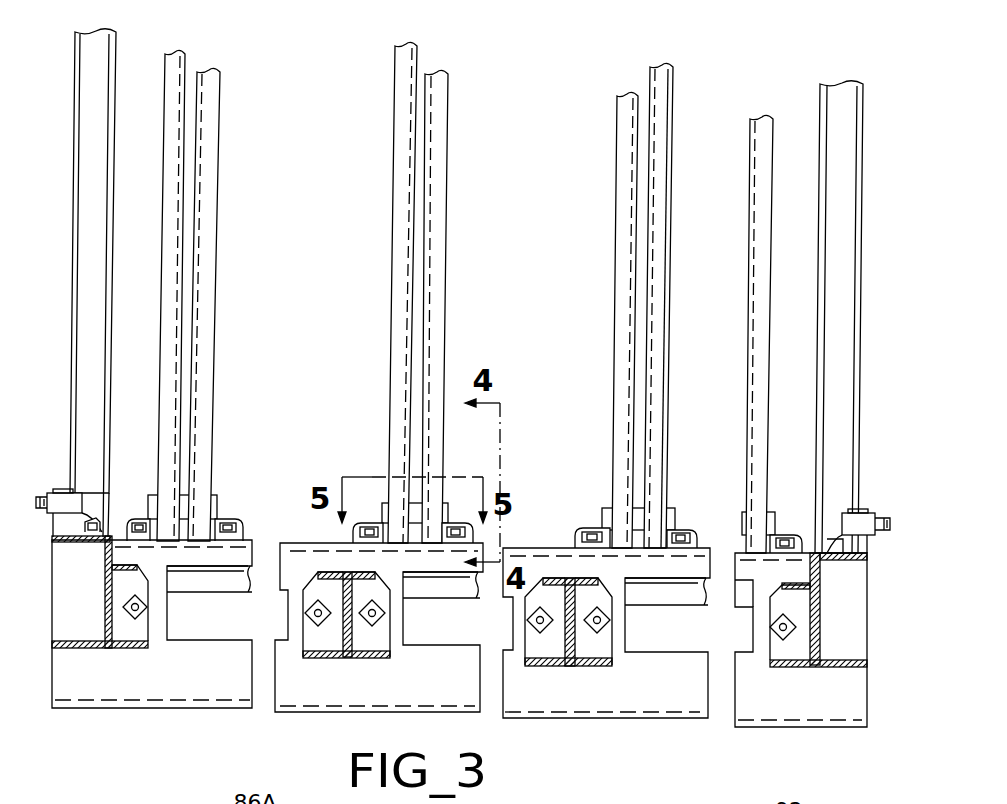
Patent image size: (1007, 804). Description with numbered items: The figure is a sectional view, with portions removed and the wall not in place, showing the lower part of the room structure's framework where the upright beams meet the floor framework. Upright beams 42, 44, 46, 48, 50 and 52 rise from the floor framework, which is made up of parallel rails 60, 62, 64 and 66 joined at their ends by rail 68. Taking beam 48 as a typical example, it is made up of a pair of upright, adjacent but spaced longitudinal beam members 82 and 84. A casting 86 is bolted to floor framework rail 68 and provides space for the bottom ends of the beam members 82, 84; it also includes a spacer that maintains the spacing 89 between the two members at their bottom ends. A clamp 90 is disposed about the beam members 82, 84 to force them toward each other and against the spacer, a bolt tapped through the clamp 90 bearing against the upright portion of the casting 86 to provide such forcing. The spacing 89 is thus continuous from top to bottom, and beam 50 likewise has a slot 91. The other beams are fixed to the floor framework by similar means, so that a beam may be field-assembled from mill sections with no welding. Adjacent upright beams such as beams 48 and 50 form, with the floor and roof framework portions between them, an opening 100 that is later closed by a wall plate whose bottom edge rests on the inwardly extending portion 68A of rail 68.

The opening 100 is at (317, 289).
The upright beam 42 is at (863, 190).
The upright beam 44 is at (749, 180).
The upright beam 46 is at (617, 193).
The upright beam 48 is at (376, 292).
The upright beam 50 is at (216, 222).
The upright beam 52 is at (75, 143).
The rail 60 is at (106, 553).
The rail 62 is at (370, 658).
The rail 64 is at (570, 666).
The rail 66 is at (818, 646).
The rail 68 is at (152, 622).
The inwardly extending portion 68A is at (210, 585).
The beam member 82 is at (404, 110).
The beam member 84 is at (460, 291).
The casting 86 is at (353, 537).
The spacing 89 is at (423, 66).
The clamp 90 is at (382, 511).
The slot 91 is at (190, 64).